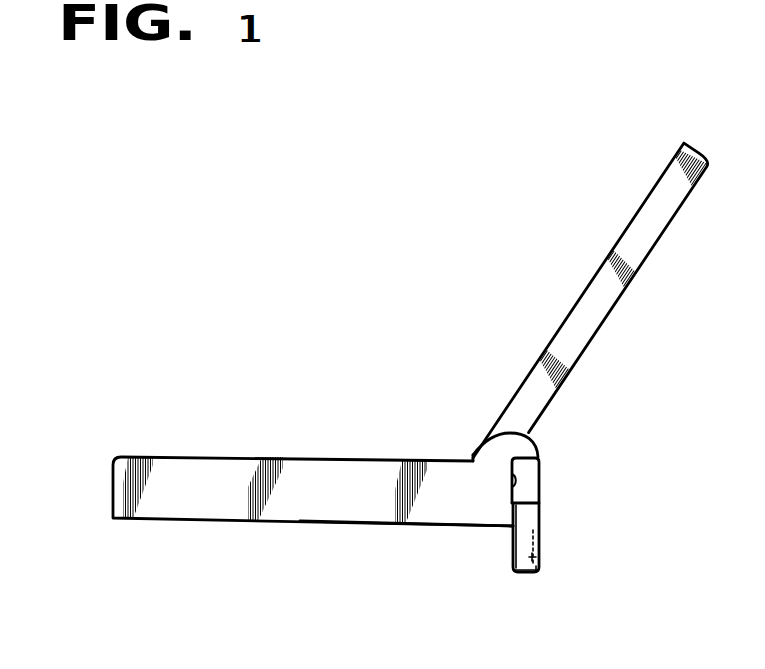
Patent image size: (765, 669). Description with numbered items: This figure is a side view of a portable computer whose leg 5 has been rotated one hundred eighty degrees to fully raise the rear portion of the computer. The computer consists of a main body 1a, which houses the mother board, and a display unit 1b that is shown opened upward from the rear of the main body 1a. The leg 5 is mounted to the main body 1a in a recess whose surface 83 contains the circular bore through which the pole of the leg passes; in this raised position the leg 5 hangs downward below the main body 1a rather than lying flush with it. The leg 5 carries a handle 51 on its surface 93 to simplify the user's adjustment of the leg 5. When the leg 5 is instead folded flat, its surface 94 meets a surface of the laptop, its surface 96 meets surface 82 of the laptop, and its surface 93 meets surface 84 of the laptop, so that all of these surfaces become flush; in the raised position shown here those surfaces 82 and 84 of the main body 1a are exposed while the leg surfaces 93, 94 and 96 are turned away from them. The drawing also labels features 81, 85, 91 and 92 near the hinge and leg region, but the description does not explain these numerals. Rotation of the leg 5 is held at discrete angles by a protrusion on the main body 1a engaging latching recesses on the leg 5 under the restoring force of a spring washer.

The main body 1a is at (313, 458).
The display unit 1b is at (607, 302).
The hinge portion 81 is at (522, 455).
The surface of the laptop 82 is at (305, 527).
The surface of the recess 83 is at (532, 482).
The surface of the laptop 84 is at (217, 490).
The corner of first housing 85 is at (476, 456).
The leg 5 is at (520, 538).
The handle 51 is at (520, 577).
The bottom of hinge block 91 is at (528, 575).
The hinge block lower portion 92 is at (540, 526).
The surface of the leg 93 is at (528, 561).
The surface of the leg 94 is at (512, 556).
The surface of the leg 96 is at (523, 500).